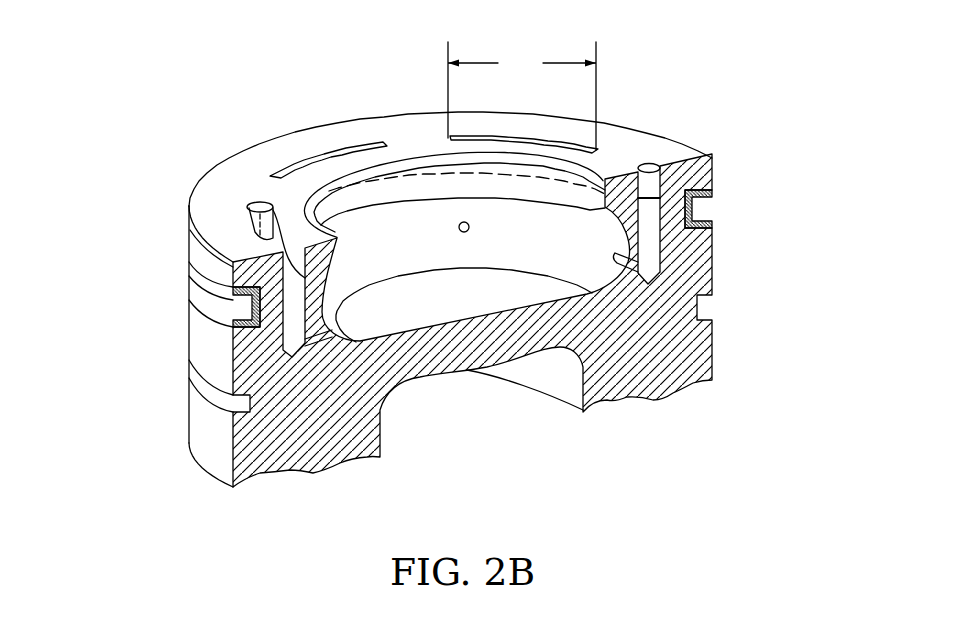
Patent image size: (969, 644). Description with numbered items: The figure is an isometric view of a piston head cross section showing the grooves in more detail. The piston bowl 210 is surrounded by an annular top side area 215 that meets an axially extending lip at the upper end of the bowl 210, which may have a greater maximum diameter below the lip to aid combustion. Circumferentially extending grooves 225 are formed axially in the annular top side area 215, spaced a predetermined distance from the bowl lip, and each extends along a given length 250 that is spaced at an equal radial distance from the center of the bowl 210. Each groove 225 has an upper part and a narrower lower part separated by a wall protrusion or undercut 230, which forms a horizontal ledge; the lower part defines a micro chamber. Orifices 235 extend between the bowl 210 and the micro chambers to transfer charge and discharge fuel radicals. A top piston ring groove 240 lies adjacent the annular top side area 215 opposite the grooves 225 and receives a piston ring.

The piston bowl 210 is at (546, 247).
The annular top side area 215 is at (660, 140).
The grooves 225 is at (257, 200).
The wall protrusion or undercut 230 is at (283, 286).
The orifices 235 is at (628, 280).
The top piston ring groove 240 is at (200, 387).
The length 250 is at (522, 96).